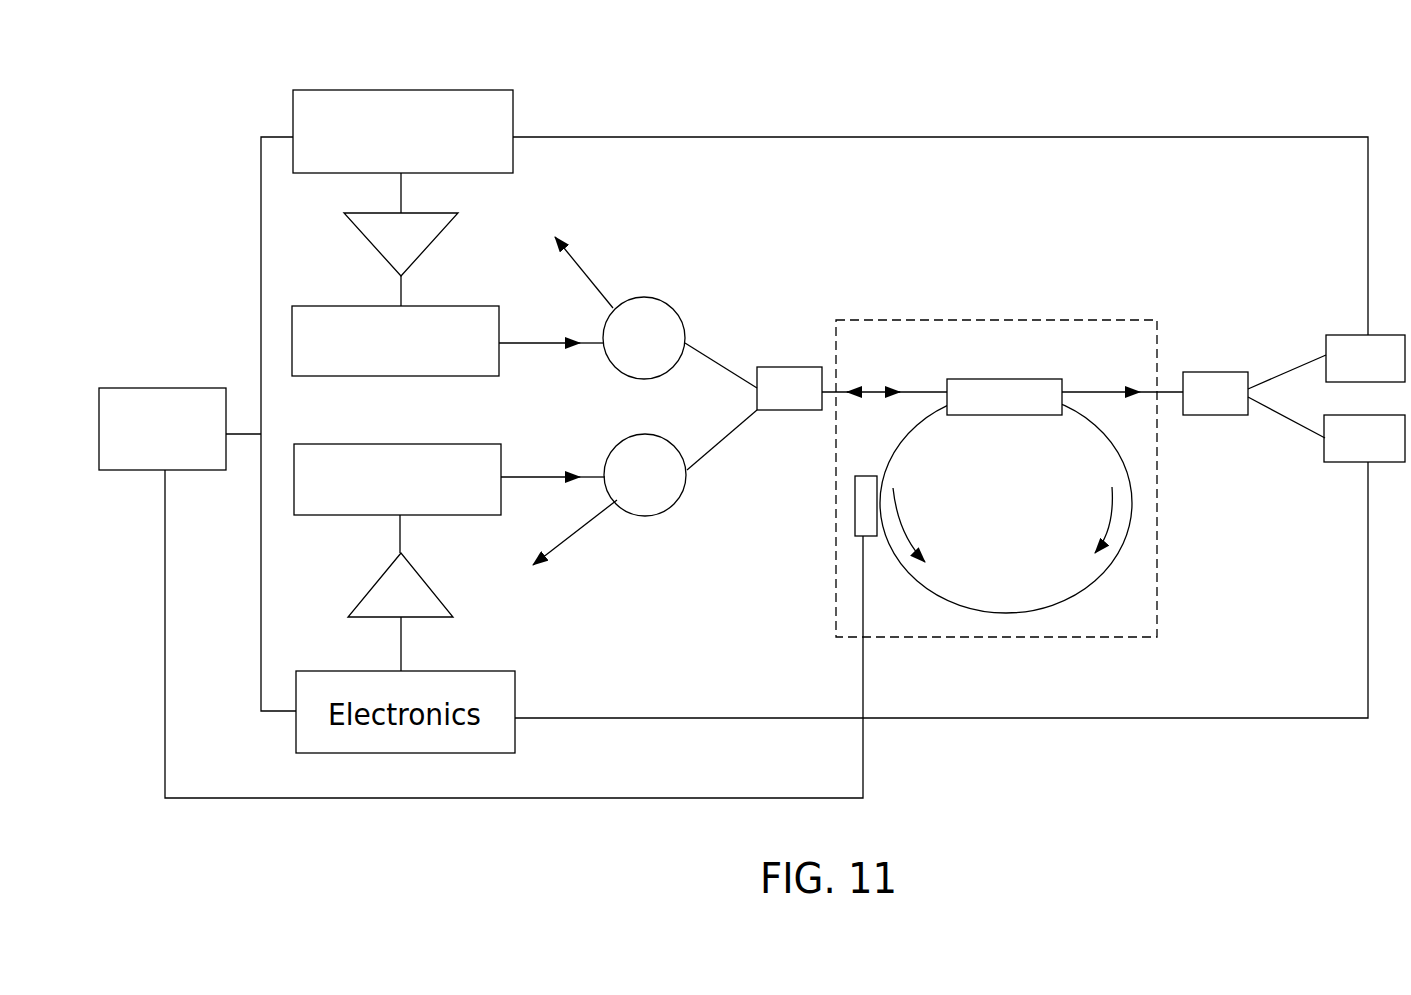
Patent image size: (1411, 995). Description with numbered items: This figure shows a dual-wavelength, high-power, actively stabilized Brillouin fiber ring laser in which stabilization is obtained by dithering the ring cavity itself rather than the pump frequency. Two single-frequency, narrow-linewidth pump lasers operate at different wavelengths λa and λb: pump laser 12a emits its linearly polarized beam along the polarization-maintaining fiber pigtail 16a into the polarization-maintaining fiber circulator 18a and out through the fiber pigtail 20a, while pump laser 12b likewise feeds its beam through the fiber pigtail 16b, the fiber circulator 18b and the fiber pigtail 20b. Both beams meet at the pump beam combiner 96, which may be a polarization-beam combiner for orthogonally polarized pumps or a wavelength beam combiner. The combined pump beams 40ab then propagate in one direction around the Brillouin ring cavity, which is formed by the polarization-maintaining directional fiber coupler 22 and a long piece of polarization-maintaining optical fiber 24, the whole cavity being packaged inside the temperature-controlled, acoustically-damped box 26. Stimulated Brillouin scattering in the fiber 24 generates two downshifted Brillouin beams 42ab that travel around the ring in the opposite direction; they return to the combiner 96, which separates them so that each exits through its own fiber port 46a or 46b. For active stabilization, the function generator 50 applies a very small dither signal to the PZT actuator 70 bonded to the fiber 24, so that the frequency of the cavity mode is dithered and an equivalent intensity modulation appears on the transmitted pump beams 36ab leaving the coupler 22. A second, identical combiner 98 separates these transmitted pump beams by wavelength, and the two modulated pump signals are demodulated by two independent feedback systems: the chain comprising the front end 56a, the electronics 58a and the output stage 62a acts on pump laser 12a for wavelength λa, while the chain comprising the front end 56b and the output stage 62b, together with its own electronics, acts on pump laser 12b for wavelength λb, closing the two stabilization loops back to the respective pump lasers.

The feedback system electronics 58a is at (393, 89).
The feedback system output stage 62a is at (395, 250).
The pump laser 12a is at (357, 306).
The function generator 50 is at (143, 383).
The pump laser 12b is at (338, 515).
The feedback system output stage 62b is at (392, 592).
The polarization-maintaining fiber pigtail 16a is at (552, 342).
The fiber port 46a is at (590, 278).
The polarization-maintaining fiber circulator 18a is at (668, 302).
The polarization-maintaining fiber pigtail 20a is at (727, 365).
The pump beam combiner 96 is at (793, 367).
The polarization-maintaining fiber pigtail 16b is at (560, 475).
The polarization-maintaining fiber circulator 18b is at (672, 507).
The polarization-maintaining fiber pigtail 20b is at (723, 438).
The fiber port 46b is at (583, 525).
The polarization-maintaining optical fiber 24 is at (977, 610).
The polarization-maintaining directional fiber coupler 22 is at (1012, 379).
The transmitted pump beams 36ab is at (1100, 388).
The downshifted Brillouin beams 42ab is at (941, 525).
The combined pump beams 40ab is at (1072, 520).
The PZT actuator 70 is at (855, 497).
The temperature-controlled acoustically-damped box 26 is at (1048, 320).
The pump beam combiner 98 is at (1220, 372).
The feedback system front end 56a is at (1357, 335).
The feedback system front end 56b is at (1353, 462).